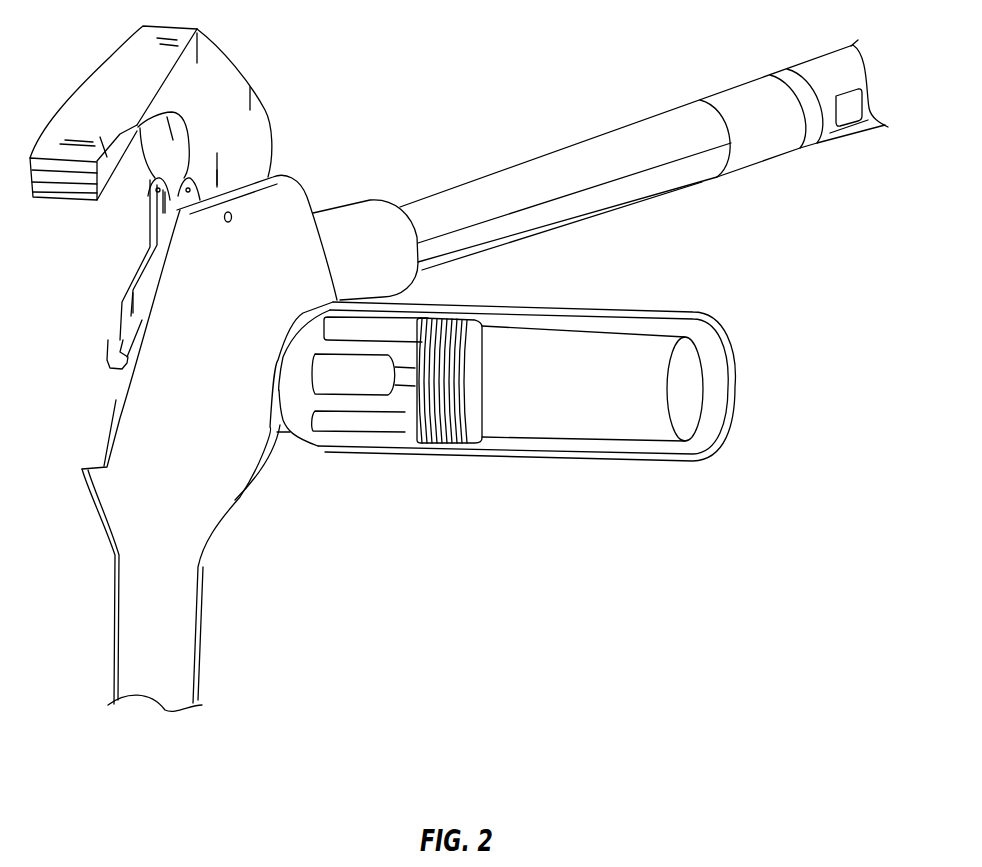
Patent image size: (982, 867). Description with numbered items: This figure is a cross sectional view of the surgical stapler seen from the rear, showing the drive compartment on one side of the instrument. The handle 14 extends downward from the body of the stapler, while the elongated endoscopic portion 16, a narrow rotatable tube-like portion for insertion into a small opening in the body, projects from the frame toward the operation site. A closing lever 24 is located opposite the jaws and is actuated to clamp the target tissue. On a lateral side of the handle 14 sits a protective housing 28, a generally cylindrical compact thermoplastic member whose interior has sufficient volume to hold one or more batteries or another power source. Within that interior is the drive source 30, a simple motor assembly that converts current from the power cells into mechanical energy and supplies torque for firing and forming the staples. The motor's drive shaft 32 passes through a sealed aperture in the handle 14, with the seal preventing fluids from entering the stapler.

The handle 14 is at (196, 522).
The endoscopic portion 16 is at (568, 143).
The closing lever 24 is at (172, 27).
The protective housing 28 is at (572, 377).
The drive source 30 is at (434, 376).
The drive shaft 32 is at (354, 375).